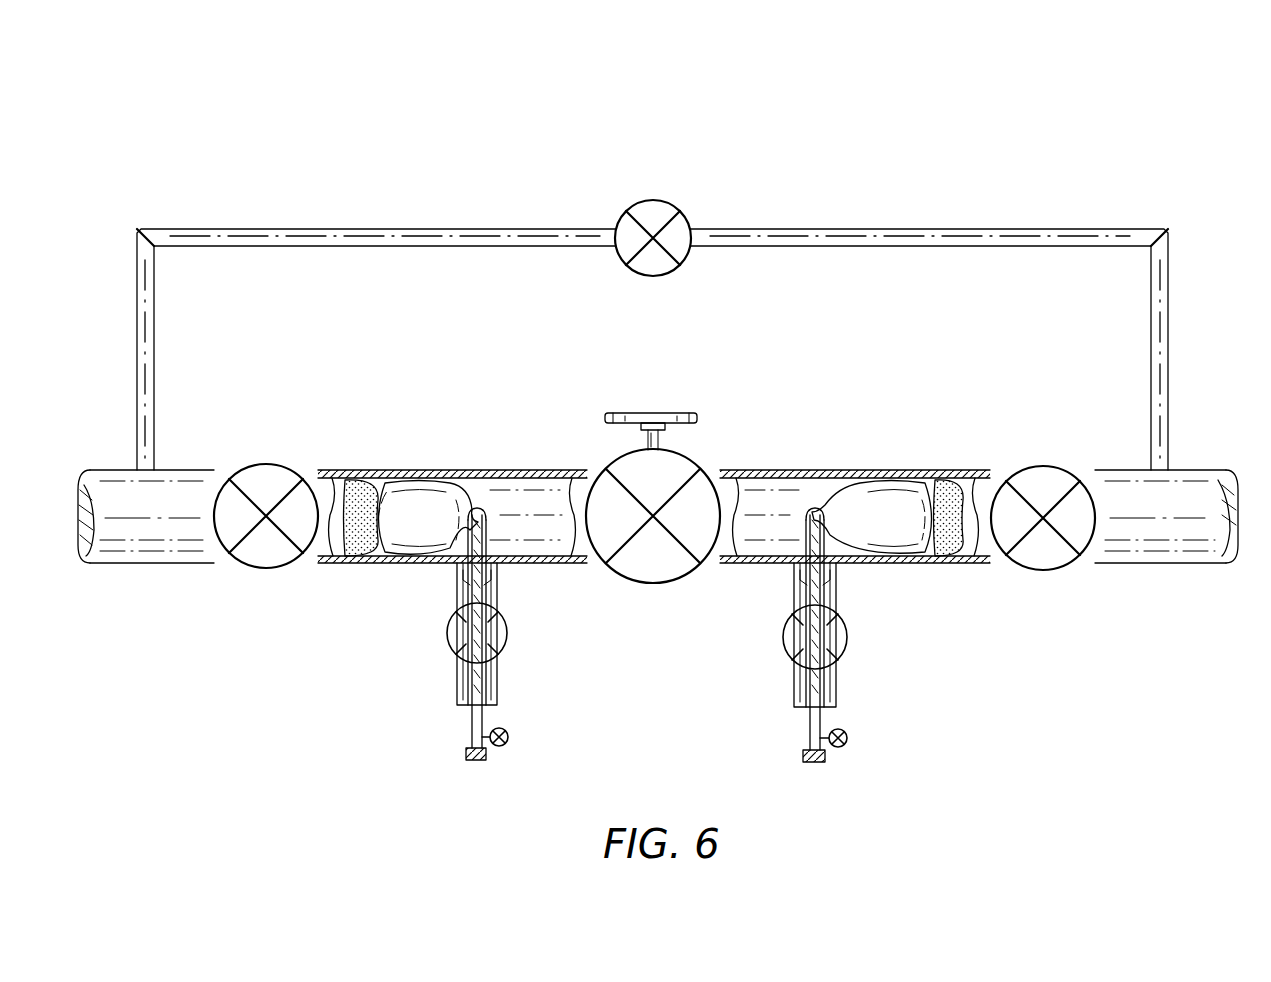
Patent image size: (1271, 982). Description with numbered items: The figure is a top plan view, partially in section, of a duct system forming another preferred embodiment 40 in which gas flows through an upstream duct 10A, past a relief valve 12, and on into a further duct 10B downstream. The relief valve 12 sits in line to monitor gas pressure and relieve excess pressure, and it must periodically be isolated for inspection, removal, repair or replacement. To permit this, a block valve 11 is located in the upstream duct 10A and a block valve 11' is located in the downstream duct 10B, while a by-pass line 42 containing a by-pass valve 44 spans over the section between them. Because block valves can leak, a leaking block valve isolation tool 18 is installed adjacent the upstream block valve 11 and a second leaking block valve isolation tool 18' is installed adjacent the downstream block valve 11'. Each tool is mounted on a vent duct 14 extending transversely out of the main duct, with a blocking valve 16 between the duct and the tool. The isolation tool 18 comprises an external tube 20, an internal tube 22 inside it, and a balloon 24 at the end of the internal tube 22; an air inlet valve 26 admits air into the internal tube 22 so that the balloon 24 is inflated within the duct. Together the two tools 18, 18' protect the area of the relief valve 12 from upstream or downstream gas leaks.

The preferred embodiment 40 is at (862, 118).
The bypass line 42 is at (469, 229).
The by-pass valve 44 is at (666, 209).
The upstream duct 10A is at (187, 540).
The further duct 10B is at (1165, 540).
The block valve 11 is at (279, 559).
The block valve 11' is at (1043, 563).
The relief valve 12 is at (664, 572).
The vent duct 14 is at (445, 575).
The blocking valve 16 is at (445, 638).
The leaking block valve isolation tool 18 is at (416, 670).
The leaking block valve isolation tool 18' is at (875, 636).
The external tube 20 is at (483, 712).
The internal tube 22 is at (463, 750).
The balloon 24 is at (420, 513).
The air inlet valve 26 is at (503, 748).